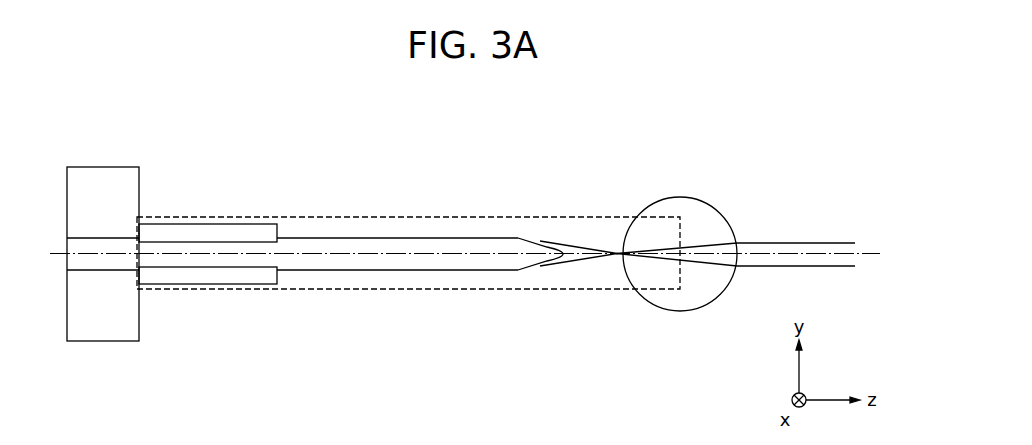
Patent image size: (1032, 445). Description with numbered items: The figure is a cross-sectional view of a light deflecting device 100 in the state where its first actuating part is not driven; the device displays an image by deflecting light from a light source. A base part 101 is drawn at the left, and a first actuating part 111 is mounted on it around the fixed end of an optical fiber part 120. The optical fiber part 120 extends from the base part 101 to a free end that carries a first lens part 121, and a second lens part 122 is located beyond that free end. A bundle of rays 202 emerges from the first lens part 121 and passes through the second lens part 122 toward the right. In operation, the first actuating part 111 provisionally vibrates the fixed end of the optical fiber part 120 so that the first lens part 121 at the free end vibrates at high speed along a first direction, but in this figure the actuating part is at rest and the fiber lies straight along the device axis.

The light deflecting device 100 is at (431, 178).
The base part 101 is at (102, 332).
The first actuating part 111 is at (265, 240).
The optical fiber part 120 is at (353, 237).
The first lens part 121 is at (539, 240).
The second lens part 122 is at (702, 203).
The bundle of rays 202 is at (802, 241).